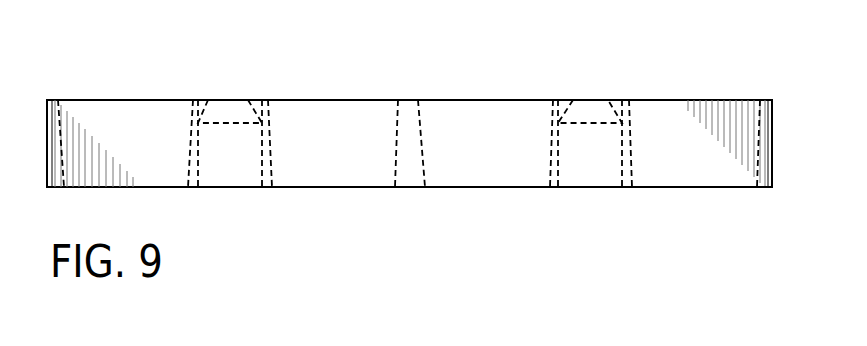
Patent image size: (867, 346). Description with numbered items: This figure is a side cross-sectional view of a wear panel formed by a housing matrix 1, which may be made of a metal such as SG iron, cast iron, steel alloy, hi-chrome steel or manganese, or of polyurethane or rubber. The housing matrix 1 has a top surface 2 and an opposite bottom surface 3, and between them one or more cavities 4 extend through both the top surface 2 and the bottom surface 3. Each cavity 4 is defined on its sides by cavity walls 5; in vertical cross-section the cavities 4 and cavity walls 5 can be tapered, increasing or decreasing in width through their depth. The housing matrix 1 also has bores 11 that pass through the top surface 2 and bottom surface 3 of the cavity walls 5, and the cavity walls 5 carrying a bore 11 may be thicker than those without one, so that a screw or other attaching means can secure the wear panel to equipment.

The housing matrix 1 is at (112, 68).
The top surface 2 is at (655, 100).
The bottom surface 3 is at (662, 187).
The cavity 4 is at (330, 115).
The cavity wall 5 is at (408, 120).
The bore 11 is at (228, 167).